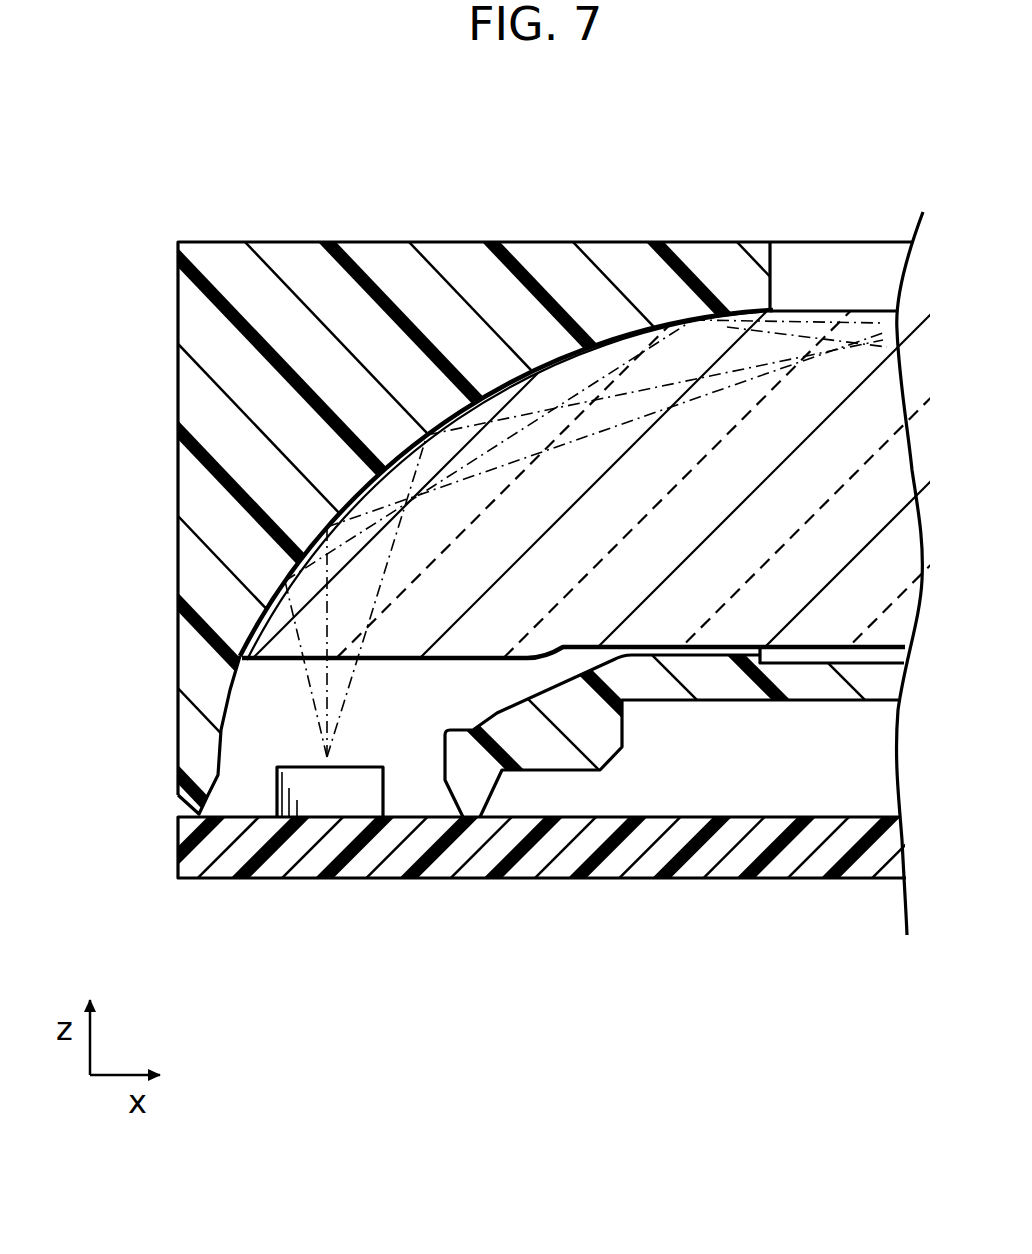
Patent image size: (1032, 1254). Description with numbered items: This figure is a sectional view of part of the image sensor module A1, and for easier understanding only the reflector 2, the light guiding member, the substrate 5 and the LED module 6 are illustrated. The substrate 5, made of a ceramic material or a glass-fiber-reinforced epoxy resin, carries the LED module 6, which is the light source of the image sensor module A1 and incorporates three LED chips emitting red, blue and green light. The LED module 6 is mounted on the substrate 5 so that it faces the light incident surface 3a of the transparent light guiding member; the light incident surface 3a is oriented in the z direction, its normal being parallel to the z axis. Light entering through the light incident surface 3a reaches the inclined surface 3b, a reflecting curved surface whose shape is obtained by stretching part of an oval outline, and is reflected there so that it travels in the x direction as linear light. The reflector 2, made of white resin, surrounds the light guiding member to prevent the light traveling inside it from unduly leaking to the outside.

The image sensor module A1 is at (124, 130).
The reflector 2 is at (212, 418).
The light incident surface 3a is at (397, 662).
The inclined surface 3b is at (490, 418).
The substrate 5 is at (633, 855).
The LED module 6 is at (328, 797).